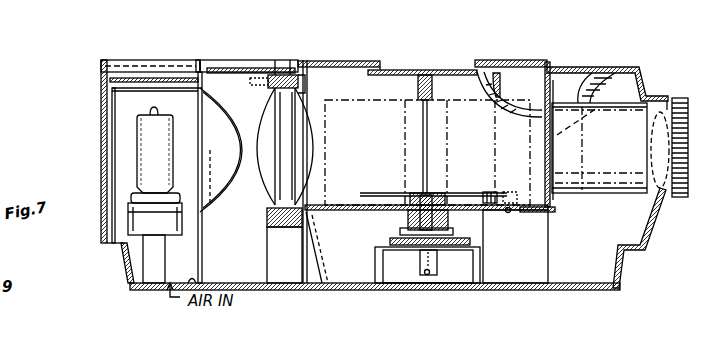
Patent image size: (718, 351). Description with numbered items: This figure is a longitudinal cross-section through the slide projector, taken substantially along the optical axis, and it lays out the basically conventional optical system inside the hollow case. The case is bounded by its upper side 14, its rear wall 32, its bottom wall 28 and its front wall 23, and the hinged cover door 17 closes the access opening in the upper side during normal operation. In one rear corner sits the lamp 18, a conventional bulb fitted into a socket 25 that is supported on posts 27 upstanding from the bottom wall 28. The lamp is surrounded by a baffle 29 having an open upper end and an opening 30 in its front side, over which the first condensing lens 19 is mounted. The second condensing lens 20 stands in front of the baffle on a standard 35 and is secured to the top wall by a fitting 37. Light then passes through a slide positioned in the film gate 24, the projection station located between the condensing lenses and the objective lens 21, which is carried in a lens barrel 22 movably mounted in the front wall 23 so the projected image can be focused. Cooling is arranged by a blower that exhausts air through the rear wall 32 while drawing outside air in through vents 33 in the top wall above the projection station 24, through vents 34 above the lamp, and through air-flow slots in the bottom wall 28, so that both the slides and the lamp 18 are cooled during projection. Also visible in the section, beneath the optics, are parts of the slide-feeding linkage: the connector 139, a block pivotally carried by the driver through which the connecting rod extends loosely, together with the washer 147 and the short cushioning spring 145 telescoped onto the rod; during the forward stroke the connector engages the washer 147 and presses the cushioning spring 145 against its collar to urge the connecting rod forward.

The upper side 14 is at (583, 70).
The hinged cover door 17 is at (345, 63).
The lamp 18 is at (173, 118).
The condensing lens 19 is at (222, 118).
The condensing lens 20 is at (318, 155).
The objective lens 21 is at (645, 198).
The lens barrel 22 is at (663, 197).
The front wall 23 is at (648, 96).
The film gate 24 is at (438, 90).
The socket 25 is at (183, 222).
The posts 27 is at (158, 258).
The bottom wall 28 is at (238, 0).
The baffle 29 is at (112, 114).
The opening 30 is at (198, 100).
The rear wall 32 is at (101, 142).
The vents 33 is at (365, 72).
The vents 34 is at (100, 74).
The standard 35 is at (270, 245).
The fitting 37 is at (280, 76).
The connector 139 is at (305, 0).
The cushioning spring 145 is at (422, 0).
The washer 147 is at (355, 0).